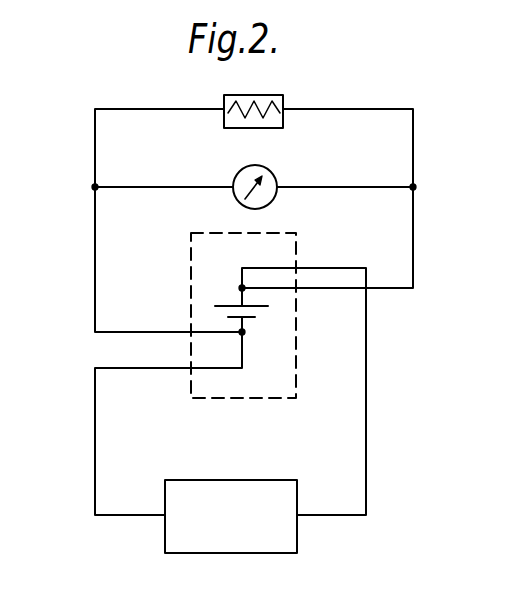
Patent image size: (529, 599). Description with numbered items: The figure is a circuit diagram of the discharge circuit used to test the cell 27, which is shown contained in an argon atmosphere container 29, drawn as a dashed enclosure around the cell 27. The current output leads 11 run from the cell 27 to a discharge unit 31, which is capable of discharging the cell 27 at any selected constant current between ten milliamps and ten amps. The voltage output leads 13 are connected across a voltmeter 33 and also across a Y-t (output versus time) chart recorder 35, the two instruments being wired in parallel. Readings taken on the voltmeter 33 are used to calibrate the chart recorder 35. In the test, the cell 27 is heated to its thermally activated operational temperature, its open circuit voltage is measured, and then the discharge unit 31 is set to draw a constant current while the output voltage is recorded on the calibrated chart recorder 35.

The current output leads 11 is at (95, 439).
The voltage output leads 13 is at (95, 228).
The cell 27 is at (222, 304).
The argon atmosphere container 29 is at (267, 399).
The discharge unit 31 is at (220, 487).
The voltmeter 33 is at (268, 185).
The chart recorder 35 is at (223, 119).